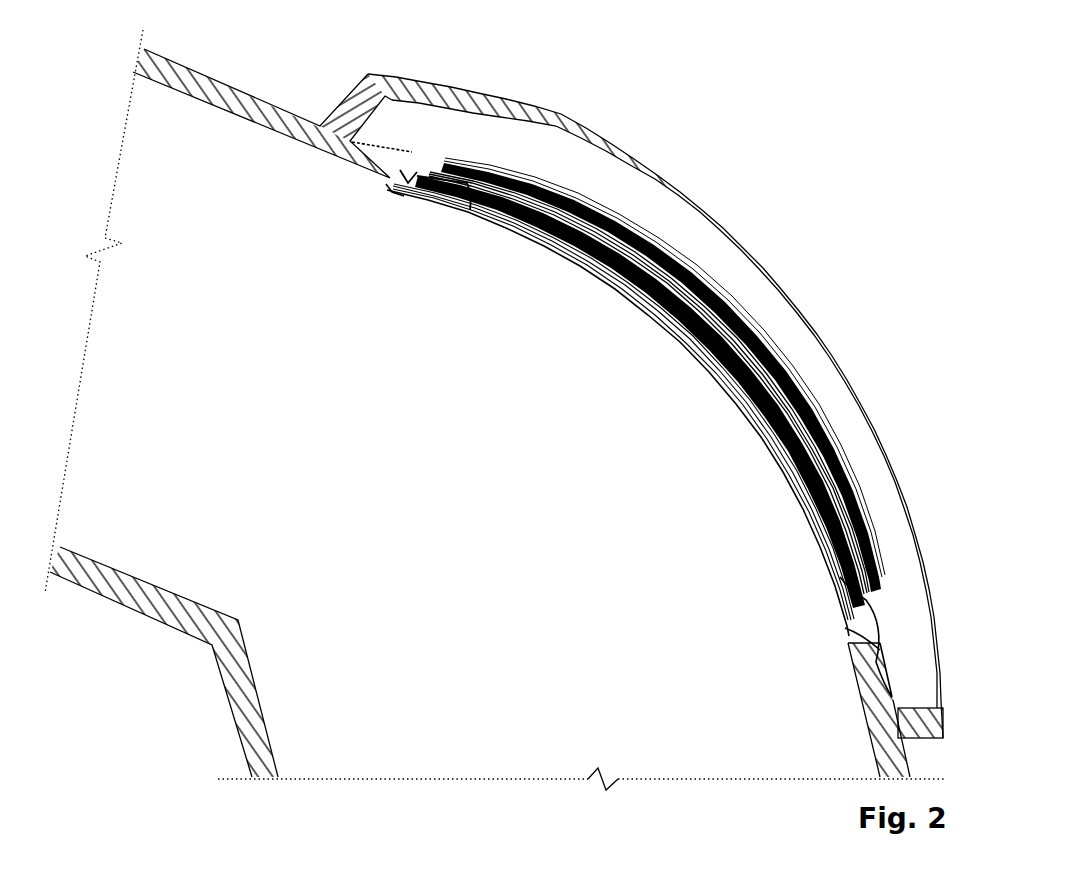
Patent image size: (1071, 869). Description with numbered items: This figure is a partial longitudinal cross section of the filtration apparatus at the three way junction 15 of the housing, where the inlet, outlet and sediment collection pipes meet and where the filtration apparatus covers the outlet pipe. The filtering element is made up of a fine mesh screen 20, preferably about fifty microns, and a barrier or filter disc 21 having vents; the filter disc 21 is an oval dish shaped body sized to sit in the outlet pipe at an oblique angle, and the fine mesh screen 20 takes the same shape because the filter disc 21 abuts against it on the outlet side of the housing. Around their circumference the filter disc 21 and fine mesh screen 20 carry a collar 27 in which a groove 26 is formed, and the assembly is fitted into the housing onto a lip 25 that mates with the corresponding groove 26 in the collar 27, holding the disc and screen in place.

The three way junction 15 is at (205, 645).
The fine mesh screen 20 is at (531, 356).
The filter disc 21 is at (735, 305).
The lip 25 is at (382, 150).
The groove 26 is at (395, 178).
The collar 27 is at (397, 207).